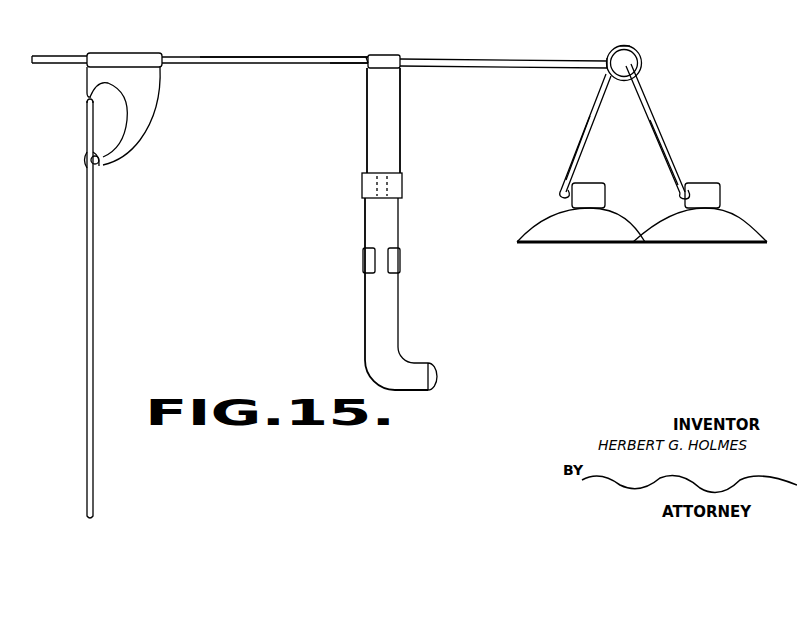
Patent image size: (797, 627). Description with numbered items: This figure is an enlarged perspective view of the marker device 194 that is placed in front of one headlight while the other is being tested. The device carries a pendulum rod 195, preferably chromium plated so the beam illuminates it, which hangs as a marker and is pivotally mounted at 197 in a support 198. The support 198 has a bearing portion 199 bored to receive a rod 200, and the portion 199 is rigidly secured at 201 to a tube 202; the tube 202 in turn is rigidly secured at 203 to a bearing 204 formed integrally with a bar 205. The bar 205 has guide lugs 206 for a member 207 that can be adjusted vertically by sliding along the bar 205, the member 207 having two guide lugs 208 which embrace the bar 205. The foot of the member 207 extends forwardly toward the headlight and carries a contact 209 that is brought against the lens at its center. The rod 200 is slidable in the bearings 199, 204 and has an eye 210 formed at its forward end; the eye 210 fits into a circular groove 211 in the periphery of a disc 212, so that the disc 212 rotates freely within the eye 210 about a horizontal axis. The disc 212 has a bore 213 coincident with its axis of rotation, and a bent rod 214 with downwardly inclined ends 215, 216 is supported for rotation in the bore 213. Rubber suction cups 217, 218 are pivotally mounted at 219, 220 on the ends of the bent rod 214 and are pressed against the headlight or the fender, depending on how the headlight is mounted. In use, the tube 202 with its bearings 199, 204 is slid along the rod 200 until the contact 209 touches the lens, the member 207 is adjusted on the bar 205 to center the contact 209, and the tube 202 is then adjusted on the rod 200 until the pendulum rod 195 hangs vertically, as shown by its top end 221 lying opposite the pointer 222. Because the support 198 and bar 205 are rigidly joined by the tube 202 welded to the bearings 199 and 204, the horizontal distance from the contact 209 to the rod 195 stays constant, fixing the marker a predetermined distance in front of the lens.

The marker device 194 is at (329, 63).
The pendulum rod 195 is at (90, 353).
The pivot 197 is at (100, 167).
The support 198 is at (140, 135).
The bearing portion 199 is at (125, 55).
The rod 200 is at (77, 36).
The securing point 201 is at (163, 57).
The tube 202 is at (258, 57).
The securing point 203 is at (367, 57).
The bearing 204 is at (388, 56).
The bar 205 is at (396, 110).
The guide lugs 206 is at (393, 248).
The member 207 is at (389, 293).
The guide lugs 208 is at (372, 183).
The contact 209 is at (437, 376).
The eye 210 is at (647, 55).
The circular groove 211 is at (608, 55).
The disc 212 is at (628, 48).
The bore 213 is at (623, 72).
The bent rod 214 is at (645, 90).
The downwardly inclined end 215 is at (673, 150).
The downwardly inclined end 216 is at (582, 150).
The rubber suction cup 217 is at (704, 238).
The rubber suction cup 218 is at (579, 238).
The pivot mounting 219 is at (684, 199).
The pivot mounting 220 is at (563, 195).
The top end 221 is at (88, 101).
The pointer 222 is at (88, 95).